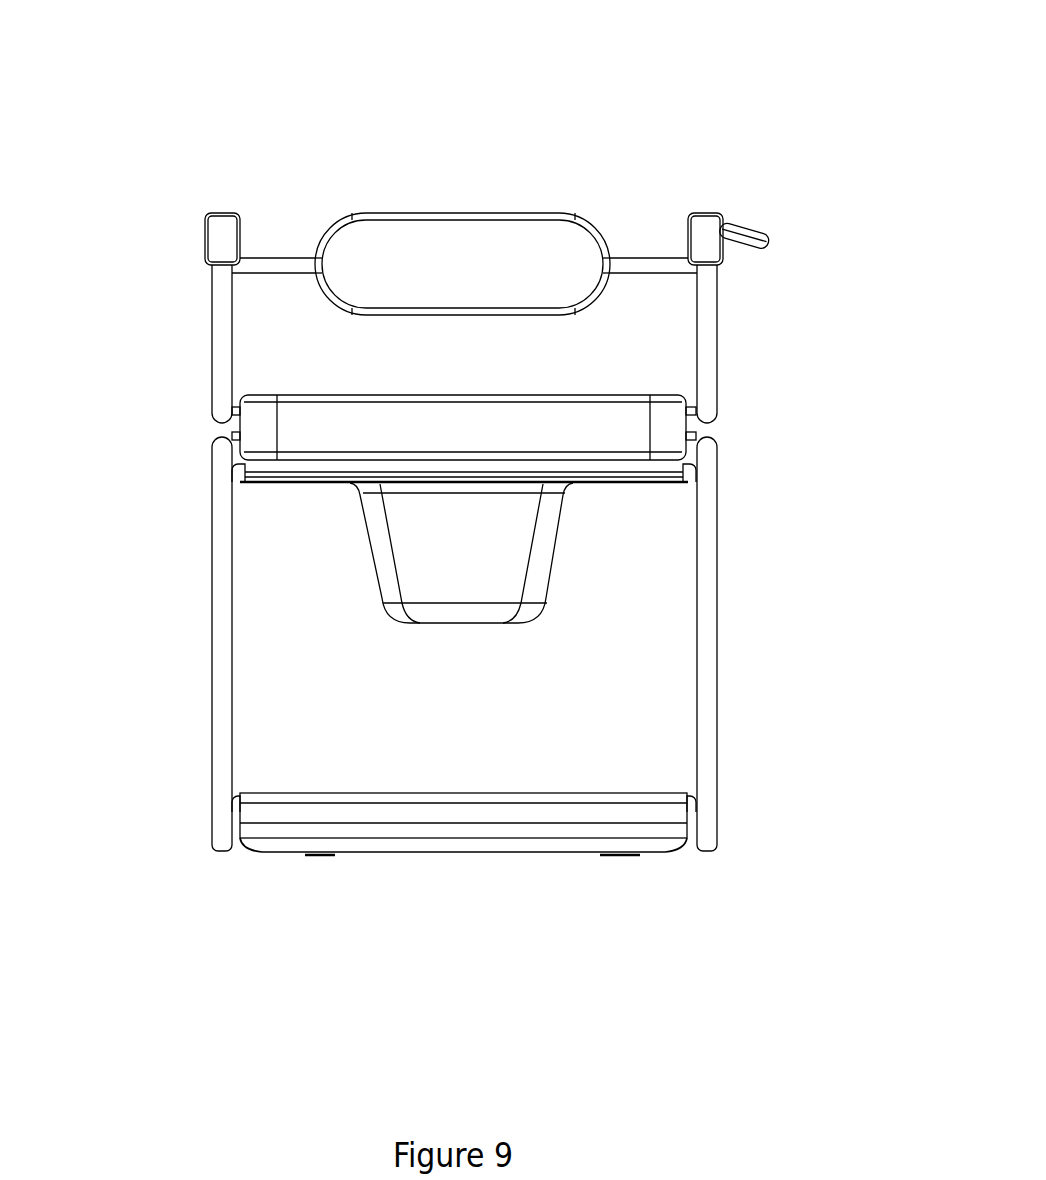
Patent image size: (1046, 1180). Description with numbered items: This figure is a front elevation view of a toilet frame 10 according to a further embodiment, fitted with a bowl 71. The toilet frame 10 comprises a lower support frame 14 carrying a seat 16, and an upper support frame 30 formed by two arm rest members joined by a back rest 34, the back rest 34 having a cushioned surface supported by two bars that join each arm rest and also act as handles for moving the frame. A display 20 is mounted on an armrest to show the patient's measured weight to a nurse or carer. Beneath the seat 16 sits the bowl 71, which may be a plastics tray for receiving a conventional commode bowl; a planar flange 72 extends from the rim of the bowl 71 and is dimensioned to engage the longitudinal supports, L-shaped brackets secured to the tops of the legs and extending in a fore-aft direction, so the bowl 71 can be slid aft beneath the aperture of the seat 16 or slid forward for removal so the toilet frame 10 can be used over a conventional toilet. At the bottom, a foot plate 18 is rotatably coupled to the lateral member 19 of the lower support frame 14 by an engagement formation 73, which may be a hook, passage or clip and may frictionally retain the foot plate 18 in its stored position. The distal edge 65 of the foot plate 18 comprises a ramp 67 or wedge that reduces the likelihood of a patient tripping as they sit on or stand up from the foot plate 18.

The toilet frame 10 is at (608, 98).
The lower support frame 14 is at (428, 644).
The seat 16 is at (272, 438).
The foot plate 18 is at (403, 895).
The lateral member 19 is at (233, 808).
The display 20 is at (748, 226).
The upper support frame 30 is at (469, 277).
The back rest 34 is at (477, 243).
The distal edge 65 is at (300, 850).
The ramp 67 is at (482, 848).
The bowl 71 is at (503, 582).
The planar flange 72 is at (465, 591).
The engagement formation 73 is at (604, 808).